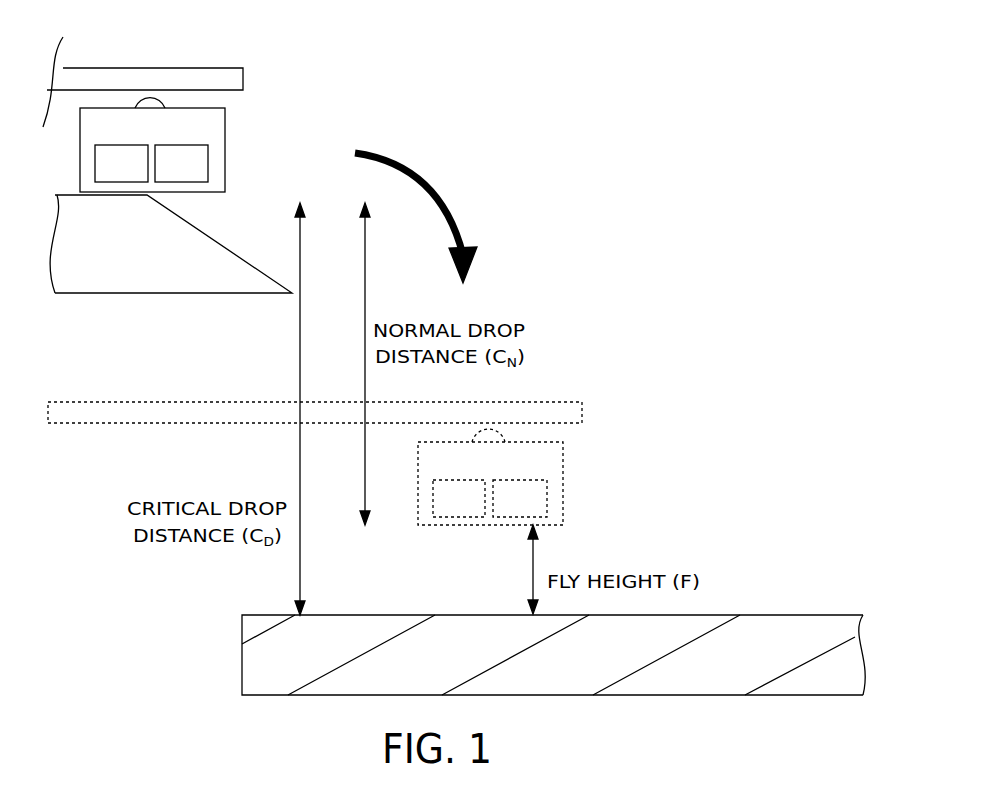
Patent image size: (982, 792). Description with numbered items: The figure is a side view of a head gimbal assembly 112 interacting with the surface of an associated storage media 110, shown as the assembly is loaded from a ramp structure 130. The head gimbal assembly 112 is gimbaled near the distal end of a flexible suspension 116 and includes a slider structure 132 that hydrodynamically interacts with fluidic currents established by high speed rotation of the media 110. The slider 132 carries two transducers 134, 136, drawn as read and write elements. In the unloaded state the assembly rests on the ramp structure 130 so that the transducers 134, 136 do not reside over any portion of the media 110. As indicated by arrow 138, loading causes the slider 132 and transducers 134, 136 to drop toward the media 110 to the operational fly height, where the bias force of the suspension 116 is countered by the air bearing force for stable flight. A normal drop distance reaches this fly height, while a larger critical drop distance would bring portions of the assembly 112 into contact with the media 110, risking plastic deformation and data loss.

The storage media 110 is at (707, 615).
The head gimbal assembly 112 is at (277, 101).
The flexible suspension 116 is at (230, 68).
The ramp structure 130 is at (188, 293).
The slider structure 132 is at (225, 130).
The transducer 134 is at (95, 163).
The transducer 136 is at (208, 163).
The arrow 138 is at (452, 218).